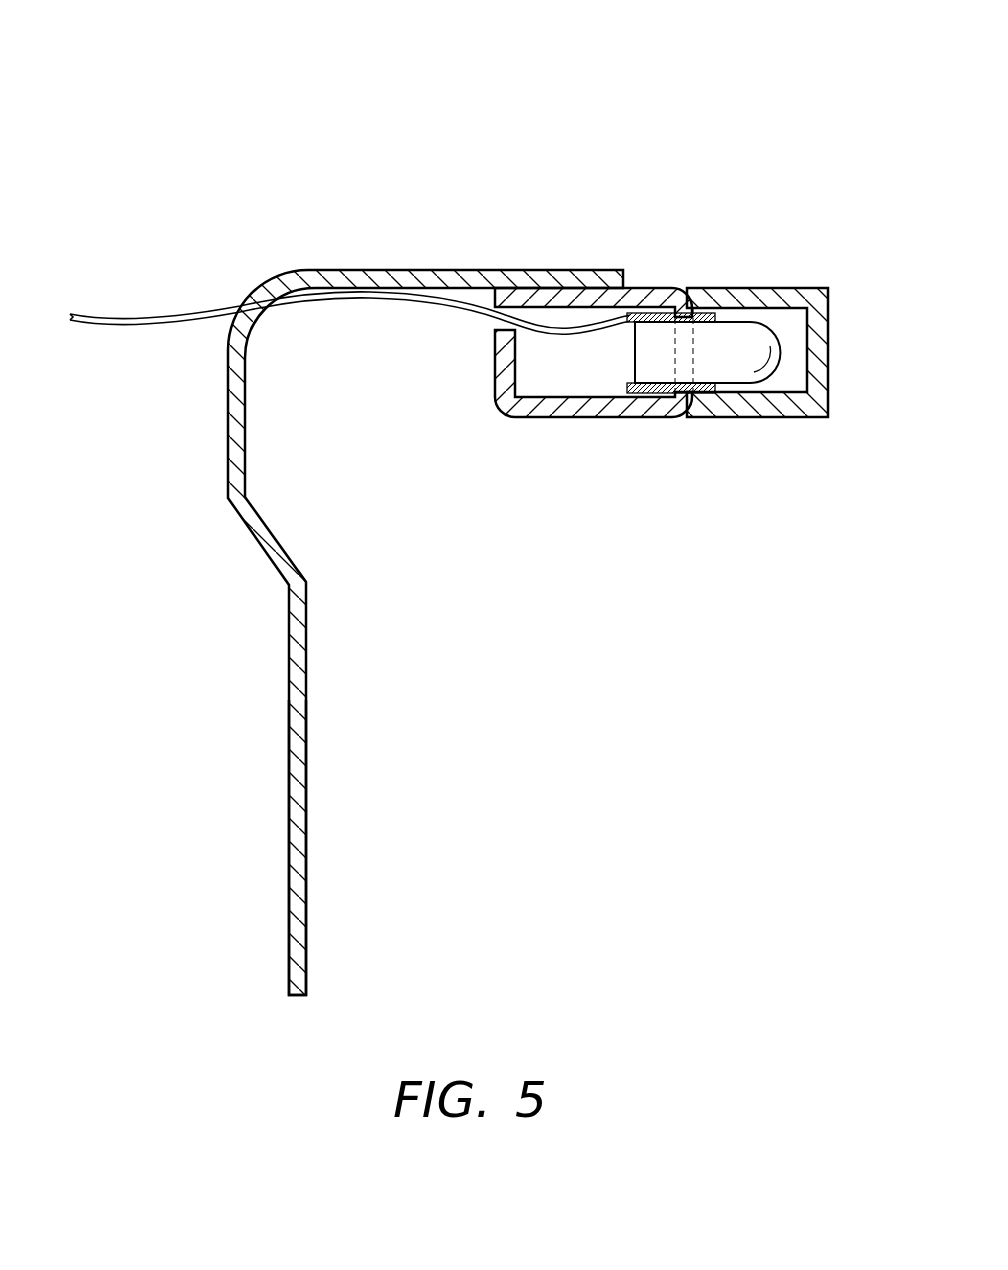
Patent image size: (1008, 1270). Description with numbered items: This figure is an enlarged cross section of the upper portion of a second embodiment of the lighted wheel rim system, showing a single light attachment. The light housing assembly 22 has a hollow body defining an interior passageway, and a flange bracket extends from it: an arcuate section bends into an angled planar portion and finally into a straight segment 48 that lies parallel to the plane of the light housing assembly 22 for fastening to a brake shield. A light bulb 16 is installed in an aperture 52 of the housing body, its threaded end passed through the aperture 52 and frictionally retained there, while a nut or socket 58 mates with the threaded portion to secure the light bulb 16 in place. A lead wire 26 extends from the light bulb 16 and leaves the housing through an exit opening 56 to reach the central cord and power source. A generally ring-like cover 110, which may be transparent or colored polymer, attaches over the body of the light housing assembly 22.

The light housing assembly 22 is at (733, 160).
The lead wire 26 is at (305, 326).
The straight segment 48 is at (306, 863).
The aperture 52 is at (717, 317).
The exit opening 56 is at (470, 333).
The nut or socket 58 is at (657, 310).
The light bulb 16 is at (746, 357).
The cover 110 is at (828, 405).